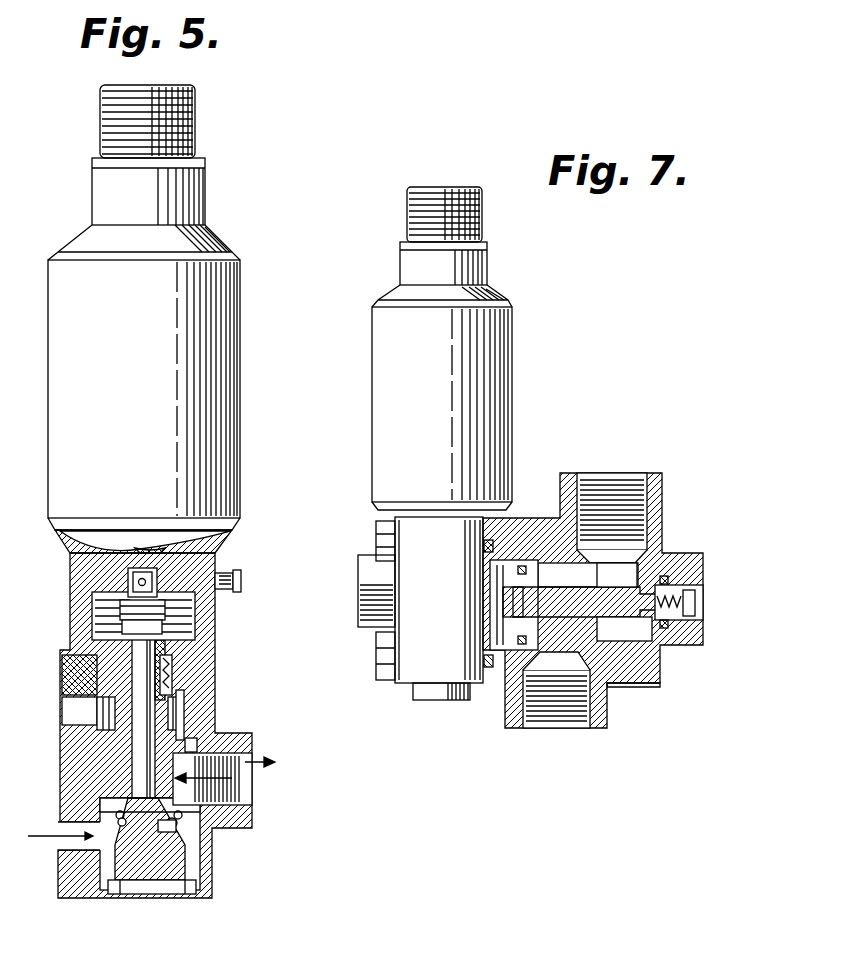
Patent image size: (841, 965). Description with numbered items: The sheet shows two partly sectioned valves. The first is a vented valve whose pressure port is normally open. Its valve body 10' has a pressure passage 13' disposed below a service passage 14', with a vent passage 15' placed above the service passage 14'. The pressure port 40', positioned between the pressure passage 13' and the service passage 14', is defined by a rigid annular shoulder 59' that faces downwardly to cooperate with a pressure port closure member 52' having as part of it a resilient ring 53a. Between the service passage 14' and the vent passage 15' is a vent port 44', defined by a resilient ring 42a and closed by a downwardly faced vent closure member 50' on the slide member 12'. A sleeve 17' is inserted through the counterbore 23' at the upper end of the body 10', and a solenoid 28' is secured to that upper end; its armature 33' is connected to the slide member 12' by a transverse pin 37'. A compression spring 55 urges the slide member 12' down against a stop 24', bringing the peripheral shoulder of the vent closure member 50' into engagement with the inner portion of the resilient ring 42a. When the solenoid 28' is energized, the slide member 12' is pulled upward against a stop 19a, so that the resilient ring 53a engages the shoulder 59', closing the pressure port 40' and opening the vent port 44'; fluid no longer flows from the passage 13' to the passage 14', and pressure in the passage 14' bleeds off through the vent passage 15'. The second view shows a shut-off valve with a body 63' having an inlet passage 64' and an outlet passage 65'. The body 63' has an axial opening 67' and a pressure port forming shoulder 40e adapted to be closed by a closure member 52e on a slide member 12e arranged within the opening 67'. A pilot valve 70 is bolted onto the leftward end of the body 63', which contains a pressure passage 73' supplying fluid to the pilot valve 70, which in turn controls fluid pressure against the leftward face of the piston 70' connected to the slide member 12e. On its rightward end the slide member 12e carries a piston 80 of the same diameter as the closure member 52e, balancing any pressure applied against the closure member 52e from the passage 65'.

In FIG. 5, the solenoid 28' is at (144, 395).
In FIG. 5, the armature 33' is at (143, 518).
In FIG. 5, the transverse pin 37' is at (150, 518).
In FIG. 5, the compression spring 55 is at (95, 597).
In FIG. 5, the counterbore 23' is at (95, 603).
In FIG. 5, the stop 24' is at (95, 628).
In FIG. 5, the valve body 10' is at (127, 725).
In FIG. 5, the sleeve 17' is at (71, 675).
In FIG. 5, the vent passage 15' is at (61, 710).
In FIG. 5, the vent port 44' is at (112, 777).
In FIG. 5, the pressure port 40' is at (106, 820).
In FIG. 5, the rigid annular shoulder 59' is at (77, 804).
In FIG. 5, the pressure passage 13' is at (57, 828).
In FIG. 5, the slide member 12' is at (201, 672).
In FIG. 5, the vent closure member 50' is at (209, 710).
In FIG. 5, the resilient ring 42a is at (190, 746).
In FIG. 5, the service passage 14' is at (231, 779).
In FIG. 5, the resilient ring 53a is at (200, 822).
In FIG. 5, the pressure port closure member 52' is at (208, 842).
In FIG. 5, the stop 19a is at (176, 894).
In FIG. 7, the pilot valve 70 is at (420, 608).
In FIG. 7, the piston 70' is at (480, 590).
In FIG. 7, the valve body 63' is at (593, 600).
In FIG. 7, the outlet passage 65' is at (612, 503).
In FIG. 7, the axial opening 67' is at (588, 514).
In FIG. 7, the pressure passage 73' is at (500, 634).
In FIG. 7, the slide member 12e is at (612, 607).
In FIG. 7, the closure member 52e is at (572, 632).
In FIG. 7, the piston 80 is at (673, 582).
In FIG. 7, the inlet passage 64' is at (554, 703).
In FIG. 7, the pressure port forming member 40e is at (606, 684).